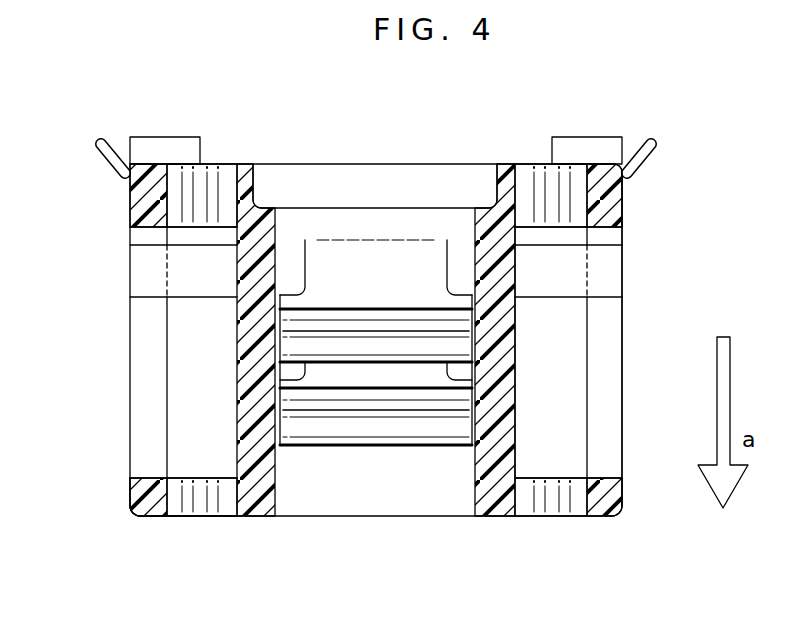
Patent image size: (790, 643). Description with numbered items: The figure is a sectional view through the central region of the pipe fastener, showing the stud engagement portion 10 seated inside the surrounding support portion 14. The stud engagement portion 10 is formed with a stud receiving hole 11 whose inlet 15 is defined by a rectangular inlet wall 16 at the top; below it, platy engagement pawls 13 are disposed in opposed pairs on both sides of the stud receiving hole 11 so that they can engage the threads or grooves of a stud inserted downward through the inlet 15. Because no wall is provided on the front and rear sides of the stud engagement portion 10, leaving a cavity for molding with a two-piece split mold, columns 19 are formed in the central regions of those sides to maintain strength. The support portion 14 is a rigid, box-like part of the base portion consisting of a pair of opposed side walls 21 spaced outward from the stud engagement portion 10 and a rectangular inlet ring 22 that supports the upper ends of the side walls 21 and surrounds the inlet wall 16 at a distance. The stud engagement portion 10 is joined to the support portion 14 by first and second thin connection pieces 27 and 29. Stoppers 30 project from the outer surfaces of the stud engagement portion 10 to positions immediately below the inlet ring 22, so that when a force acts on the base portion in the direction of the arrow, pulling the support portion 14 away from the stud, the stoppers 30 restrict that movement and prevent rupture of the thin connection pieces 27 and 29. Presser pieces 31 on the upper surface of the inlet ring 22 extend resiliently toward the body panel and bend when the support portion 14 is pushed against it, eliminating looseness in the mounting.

The stud engagement portion 10 is at (255, 519).
The stud receiving hole 11 is at (367, 222).
The engagement pawls 13 is at (410, 337).
The support portion 14 is at (124, 494).
The inlet 15 is at (273, 210).
The inlet wall 16 is at (480, 210).
The columns 19 is at (515, 455).
The side walls 21 is at (608, 360).
The inlet ring 22 is at (135, 217).
The first thin connection piece 27 is at (200, 177).
The second thin connection piece 29 is at (185, 500).
The stoppers 30 is at (137, 280).
The presser pieces 31 is at (99, 143).